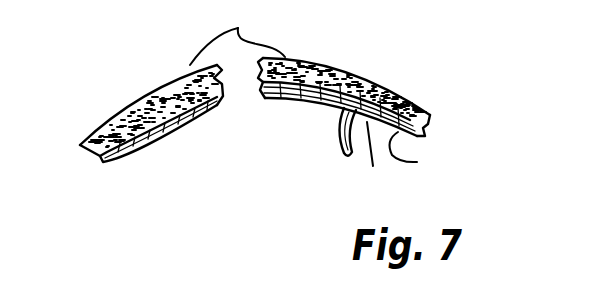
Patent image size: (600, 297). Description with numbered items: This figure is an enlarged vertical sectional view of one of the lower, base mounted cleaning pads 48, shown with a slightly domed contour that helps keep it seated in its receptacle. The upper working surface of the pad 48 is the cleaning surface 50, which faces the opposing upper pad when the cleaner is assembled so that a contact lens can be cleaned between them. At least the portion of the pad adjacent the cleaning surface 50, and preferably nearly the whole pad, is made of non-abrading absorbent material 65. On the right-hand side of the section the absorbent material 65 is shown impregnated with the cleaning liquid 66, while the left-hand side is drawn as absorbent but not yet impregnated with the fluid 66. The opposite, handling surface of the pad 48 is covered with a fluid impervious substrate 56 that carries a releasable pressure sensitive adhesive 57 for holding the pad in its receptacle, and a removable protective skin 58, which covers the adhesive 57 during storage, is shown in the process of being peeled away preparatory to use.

The lower, base mounted cleaning pad 48 is at (120, 111).
The cleaning surface 50 is at (407, 97).
The absorbent material 65 is at (237, 32).
The removable protective skin 58 is at (343, 122).
The releasable pressure sensitive adhesive 57 is at (372, 162).
The cleaning liquid 66 is at (354, 148).
The fluid impervious substrate 56 is at (425, 157).